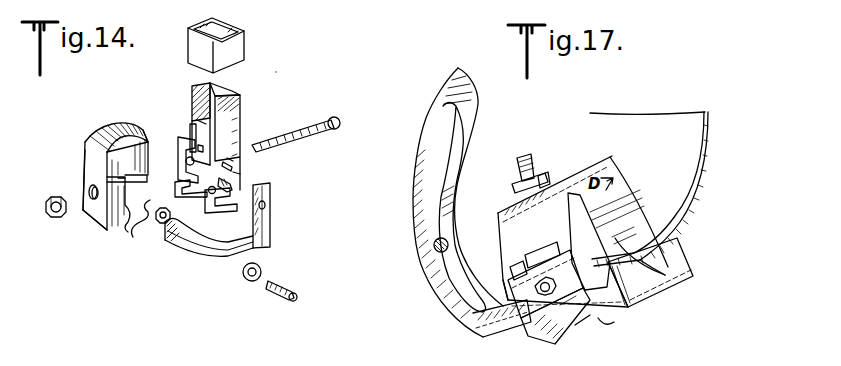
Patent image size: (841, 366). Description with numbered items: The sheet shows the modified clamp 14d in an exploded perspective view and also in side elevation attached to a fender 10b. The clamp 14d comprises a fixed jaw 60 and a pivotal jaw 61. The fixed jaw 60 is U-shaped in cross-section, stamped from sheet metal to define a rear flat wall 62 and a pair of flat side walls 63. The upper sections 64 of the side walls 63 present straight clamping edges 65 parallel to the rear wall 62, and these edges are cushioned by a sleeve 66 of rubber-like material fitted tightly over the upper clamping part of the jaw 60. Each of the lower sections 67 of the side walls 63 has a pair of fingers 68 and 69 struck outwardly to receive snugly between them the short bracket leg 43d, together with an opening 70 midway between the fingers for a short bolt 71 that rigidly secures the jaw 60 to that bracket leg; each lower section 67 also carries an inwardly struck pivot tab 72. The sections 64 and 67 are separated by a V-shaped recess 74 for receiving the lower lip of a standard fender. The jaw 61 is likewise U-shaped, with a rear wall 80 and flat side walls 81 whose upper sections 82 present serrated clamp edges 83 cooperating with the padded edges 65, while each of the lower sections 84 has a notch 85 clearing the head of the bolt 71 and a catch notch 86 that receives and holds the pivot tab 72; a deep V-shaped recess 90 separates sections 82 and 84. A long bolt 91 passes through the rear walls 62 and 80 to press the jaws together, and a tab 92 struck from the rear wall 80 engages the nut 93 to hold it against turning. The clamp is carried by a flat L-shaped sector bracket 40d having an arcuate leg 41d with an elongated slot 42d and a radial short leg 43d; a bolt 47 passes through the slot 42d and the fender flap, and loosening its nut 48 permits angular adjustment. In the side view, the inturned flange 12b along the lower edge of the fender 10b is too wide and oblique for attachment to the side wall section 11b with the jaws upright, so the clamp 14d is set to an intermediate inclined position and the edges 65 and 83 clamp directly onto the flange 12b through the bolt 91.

In FIG. 17, the fender 10b is at (707, 113).
In FIG. 17, the side wall section 11b is at (702, 155).
In FIG. 17, the inturned flange 12b is at (668, 250).
In FIG. 14, the clamp 14d is at (283, 68).
In FIG. 17, the clamp 14d is at (621, 151).
In FIG. 14, the bracket 40d is at (231, 243).
In FIG. 17, the bracket 40d is at (450, 216).
In FIG. 14, the arcuate bracket leg 41d is at (180, 244).
In FIG. 17, the arcuate bracket leg 41d is at (423, 242).
In FIG. 14, the elongated slot 42d is at (228, 252).
In FIG. 17, the elongated slot 42d is at (423, 184).
In FIG. 14, the short bracket leg 43d is at (268, 218).
In FIG. 17, the short bracket leg 43d is at (522, 312).
In FIG. 14, the bolt 47 is at (272, 294).
In FIG. 17, the bolt 47 is at (439, 251).
In FIG. 14, the nut 48 is at (160, 225).
In FIG. 14, the fixed jaw 60 is at (237, 129).
In FIG. 17, the fixed jaw 60 is at (664, 311).
In FIG. 14, the pivotal jaw 61 is at (74, 153).
In FIG. 17, the pivotal jaw 61 is at (503, 203).
In FIG. 14, the rear flat wall 62 is at (228, 83).
In FIG. 14, the side walls 63 is at (237, 101).
In FIG. 14, the upper sections 64 is at (236, 124).
In FIG. 14, the straight clamping edges 65 is at (197, 120).
In FIG. 14, the sleeve 66 is at (235, 47).
In FIG. 17, the sleeve 66 is at (690, 288).
In FIG. 14, the lower sections 67 is at (186, 165).
In FIG. 14, the finger 68 is at (228, 158).
In FIG. 17, the finger 68 is at (557, 262).
In FIG. 14, the finger 69 is at (234, 172).
In FIG. 17, the finger 69 is at (549, 297).
In FIG. 14, the opening 70 is at (190, 138).
In FIG. 14, the short bolt 71 is at (226, 186).
In FIG. 17, the short bolt 71 is at (491, 272).
In FIG. 14, the pivot tab 72 is at (190, 190).
In FIG. 14, the V-shaped recess 74 is at (190, 133).
In FIG. 17, the V-shaped recess 74 is at (582, 328).
In FIG. 14, the rear wall 80 is at (102, 197).
In FIG. 14, the side walls 81 is at (88, 137).
In FIG. 14, the upper sections 82 is at (108, 126).
In FIG. 14, the serrated clamp edges 83 is at (138, 124).
In FIG. 14, the lower sections 84 is at (110, 232).
In FIG. 14, the notch 85 is at (127, 232).
In FIG. 17, the notch 85 is at (633, 248).
In FIG. 14, the notch 86 is at (133, 237).
In FIG. 14, the V-shaped recess 90 is at (118, 178).
In FIG. 17, the V-shaped recess 90 is at (575, 218).
In FIG. 14, the long bolt 91 is at (302, 132).
In FIG. 17, the long bolt 91 is at (612, 326).
In FIG. 14, the tab 92 is at (89, 190).
In FIG. 17, the tab 92 is at (548, 178).
In FIG. 14, the nut 93 is at (47, 215).
In FIG. 17, the nut 93 is at (517, 188).